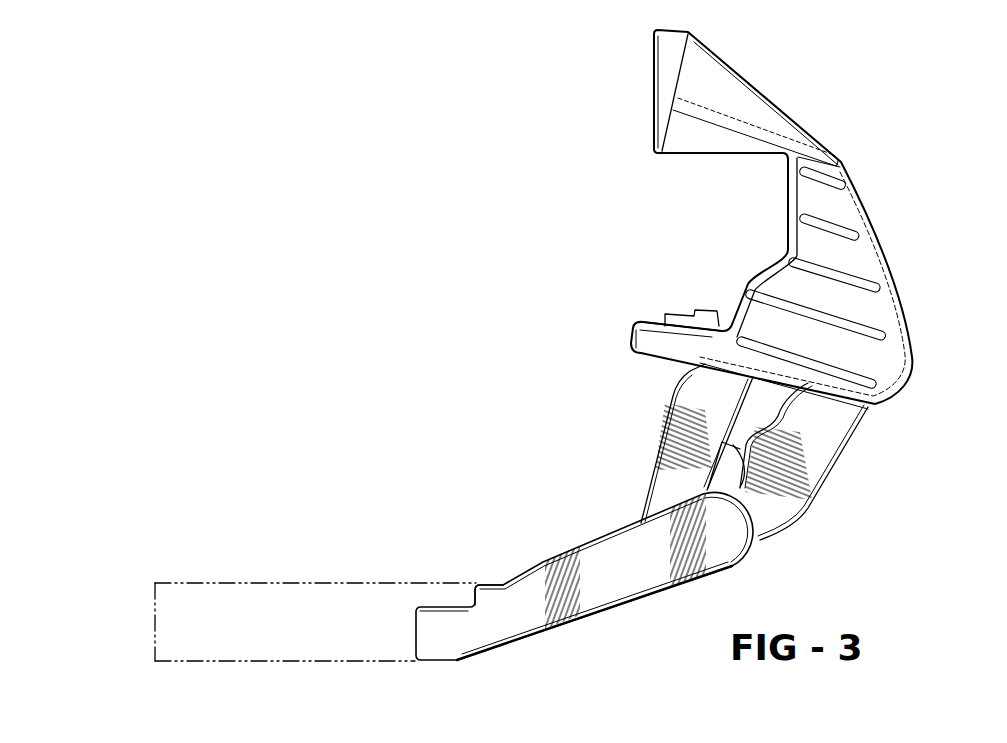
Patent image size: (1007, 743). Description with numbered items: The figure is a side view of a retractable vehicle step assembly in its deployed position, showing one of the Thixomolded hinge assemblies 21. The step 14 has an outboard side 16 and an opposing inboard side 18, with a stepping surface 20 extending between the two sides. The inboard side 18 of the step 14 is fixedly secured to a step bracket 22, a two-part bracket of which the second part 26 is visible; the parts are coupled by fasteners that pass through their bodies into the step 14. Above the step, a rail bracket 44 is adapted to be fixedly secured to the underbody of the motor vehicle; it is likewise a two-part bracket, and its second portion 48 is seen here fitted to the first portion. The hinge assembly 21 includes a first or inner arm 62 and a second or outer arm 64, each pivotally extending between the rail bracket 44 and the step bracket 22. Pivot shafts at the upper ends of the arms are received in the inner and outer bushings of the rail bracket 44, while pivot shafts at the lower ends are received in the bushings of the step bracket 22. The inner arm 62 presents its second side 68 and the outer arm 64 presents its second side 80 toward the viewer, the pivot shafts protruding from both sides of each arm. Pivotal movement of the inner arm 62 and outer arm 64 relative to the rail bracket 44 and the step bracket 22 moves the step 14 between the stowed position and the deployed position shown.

The step 14 is at (242, 638).
The outboard side 16 is at (150, 604).
The inboard side 18 is at (478, 584).
The stepping surface 20 is at (284, 582).
The hinge assembly 21 is at (475, 347).
The step bracket 22 is at (609, 596).
The second part 26 is at (614, 549).
The rail bracket 44 is at (860, 253).
The second portion 48 is at (771, 286).
The first arm 62 is at (830, 440).
The second arm 64 is at (665, 460).
The second side 68 is at (811, 450).
The second side 80 is at (715, 419).